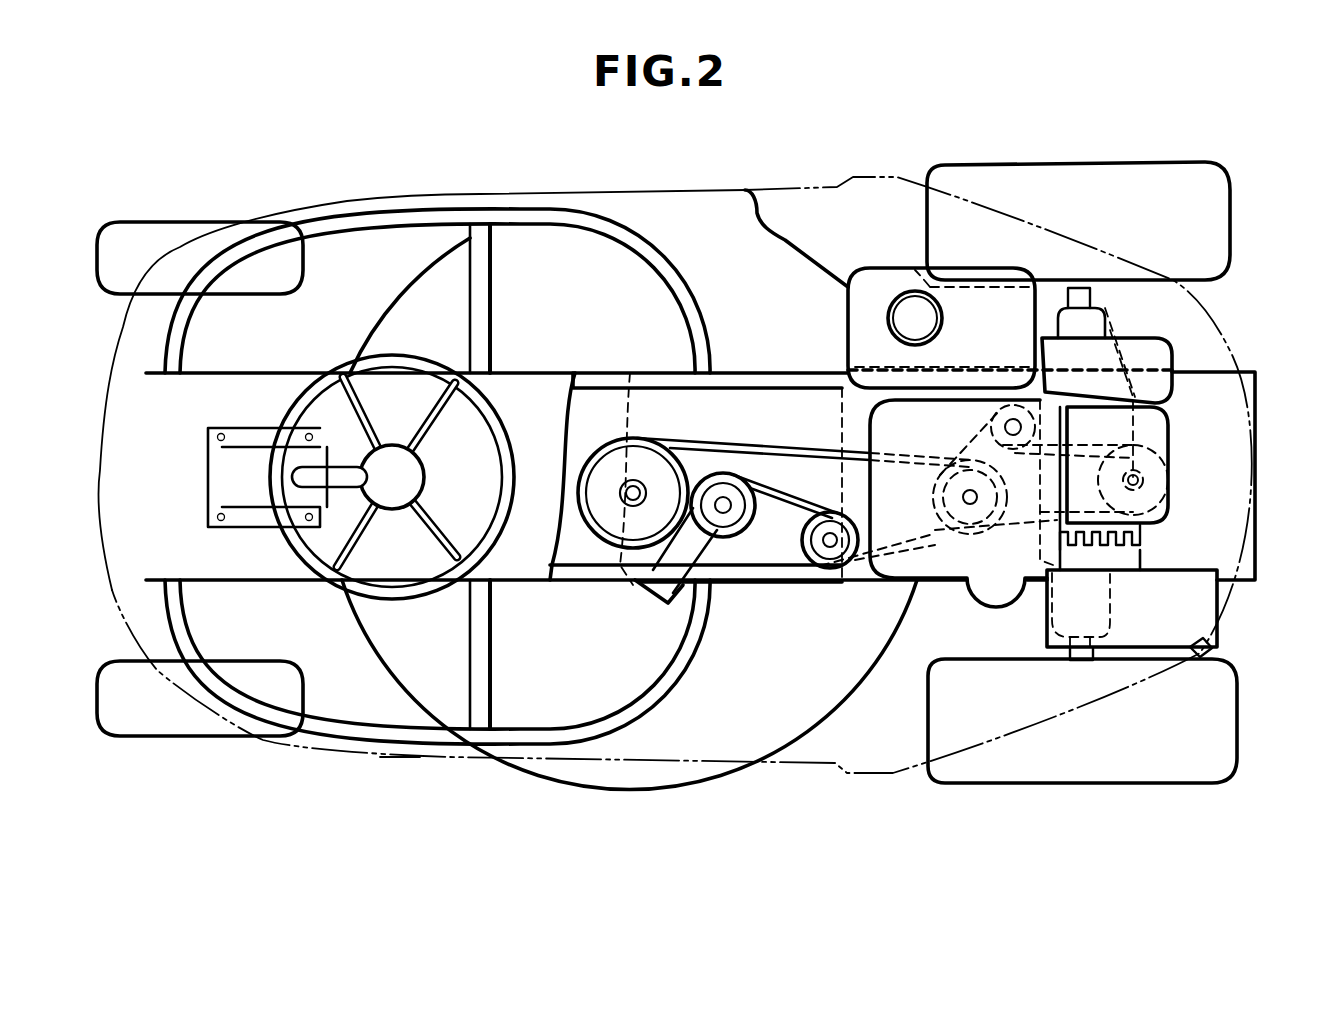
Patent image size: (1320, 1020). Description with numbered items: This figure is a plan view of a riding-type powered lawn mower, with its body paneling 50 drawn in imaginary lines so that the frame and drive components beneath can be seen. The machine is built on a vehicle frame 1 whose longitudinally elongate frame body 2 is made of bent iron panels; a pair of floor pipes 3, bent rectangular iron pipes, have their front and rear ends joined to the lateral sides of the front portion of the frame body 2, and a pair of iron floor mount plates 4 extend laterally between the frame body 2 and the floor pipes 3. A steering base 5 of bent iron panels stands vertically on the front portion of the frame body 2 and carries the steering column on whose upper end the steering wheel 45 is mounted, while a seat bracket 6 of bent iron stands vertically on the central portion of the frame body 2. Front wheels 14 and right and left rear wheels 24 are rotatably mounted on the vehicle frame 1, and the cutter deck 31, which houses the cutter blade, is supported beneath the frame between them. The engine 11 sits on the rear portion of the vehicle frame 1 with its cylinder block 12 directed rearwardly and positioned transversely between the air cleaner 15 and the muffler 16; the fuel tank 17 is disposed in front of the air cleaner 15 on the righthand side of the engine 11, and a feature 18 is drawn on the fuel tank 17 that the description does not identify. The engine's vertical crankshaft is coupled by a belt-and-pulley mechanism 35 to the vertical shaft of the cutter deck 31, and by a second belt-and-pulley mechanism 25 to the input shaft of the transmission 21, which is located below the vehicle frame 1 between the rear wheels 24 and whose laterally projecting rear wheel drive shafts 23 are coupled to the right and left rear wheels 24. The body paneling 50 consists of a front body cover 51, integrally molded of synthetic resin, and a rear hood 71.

The vehicle frame 1 is at (165, 468).
The frame body 2 is at (545, 387).
The floor pipes 3 is at (555, 210).
The floor mount plates 4 is at (470, 312).
The steering base 5 is at (248, 458).
The seat bracket 6 is at (768, 590).
The engine 11 is at (888, 583).
The cylinder block 12 is at (1168, 447).
The front wheels 14 is at (156, 225).
The air cleaner 15 is at (1150, 345).
The muffler 16 is at (1200, 622).
The fuel tank 17 is at (960, 272).
The fuel cap 18 is at (944, 320).
The transmission 21 is at (1140, 548).
The rear wheel drive shafts 23 is at (1080, 298).
The rear wheels 24 is at (1160, 178).
The belt-and-pulley mechanism 25 is at (1020, 522).
The cutter deck 31 is at (660, 792).
The belt-and-pulley mechanism 35 is at (768, 447).
The steering wheel 45 is at (410, 585).
The body paneling 50 is at (797, 176).
The front body cover 51 is at (380, 757).
The rear hood 71 is at (1236, 357).